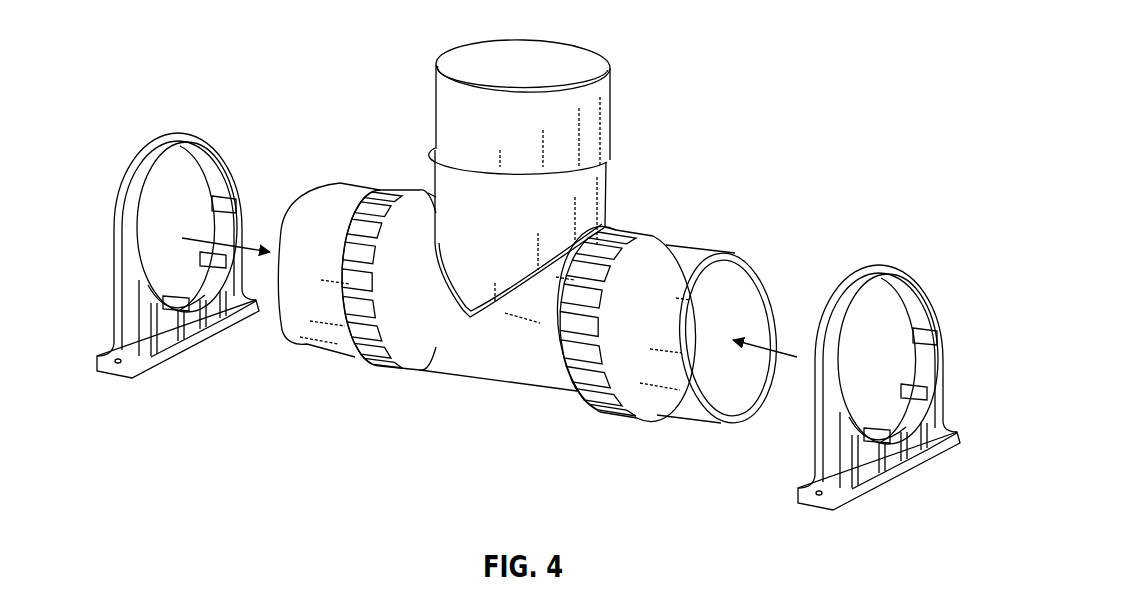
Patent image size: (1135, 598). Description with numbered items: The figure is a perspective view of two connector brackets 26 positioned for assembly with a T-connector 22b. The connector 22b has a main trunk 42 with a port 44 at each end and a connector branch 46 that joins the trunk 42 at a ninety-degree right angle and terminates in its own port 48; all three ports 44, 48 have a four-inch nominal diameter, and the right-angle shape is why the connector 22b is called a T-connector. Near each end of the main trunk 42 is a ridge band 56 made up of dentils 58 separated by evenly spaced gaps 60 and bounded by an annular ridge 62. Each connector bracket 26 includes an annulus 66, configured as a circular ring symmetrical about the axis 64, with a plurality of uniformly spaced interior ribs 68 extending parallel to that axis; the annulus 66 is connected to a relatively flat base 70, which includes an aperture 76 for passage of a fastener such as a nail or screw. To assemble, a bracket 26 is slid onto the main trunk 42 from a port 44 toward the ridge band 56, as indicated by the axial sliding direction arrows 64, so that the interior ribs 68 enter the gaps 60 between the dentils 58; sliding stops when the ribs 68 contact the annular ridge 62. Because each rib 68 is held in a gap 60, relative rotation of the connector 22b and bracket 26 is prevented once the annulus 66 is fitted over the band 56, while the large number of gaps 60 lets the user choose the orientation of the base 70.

The T-connector 22b is at (718, 62).
The connector bracket 26 is at (170, 138).
The main trunk 42 is at (494, 378).
The port 44 is at (313, 203).
The connector branch 46 is at (600, 170).
The port 48 is at (520, 52).
The ridge band 56 is at (409, 188).
The dentil 58 is at (375, 222).
The gap 60 is at (347, 297).
The annular ridge 62 is at (384, 362).
The axial sliding direction arrow 64 is at (262, 265).
The annulus 66 is at (138, 172).
The interior rib 68 is at (210, 248).
The base 70 is at (157, 362).
The aperture 76 is at (118, 373).